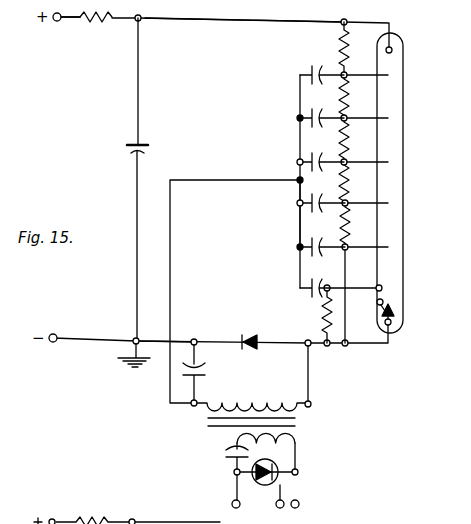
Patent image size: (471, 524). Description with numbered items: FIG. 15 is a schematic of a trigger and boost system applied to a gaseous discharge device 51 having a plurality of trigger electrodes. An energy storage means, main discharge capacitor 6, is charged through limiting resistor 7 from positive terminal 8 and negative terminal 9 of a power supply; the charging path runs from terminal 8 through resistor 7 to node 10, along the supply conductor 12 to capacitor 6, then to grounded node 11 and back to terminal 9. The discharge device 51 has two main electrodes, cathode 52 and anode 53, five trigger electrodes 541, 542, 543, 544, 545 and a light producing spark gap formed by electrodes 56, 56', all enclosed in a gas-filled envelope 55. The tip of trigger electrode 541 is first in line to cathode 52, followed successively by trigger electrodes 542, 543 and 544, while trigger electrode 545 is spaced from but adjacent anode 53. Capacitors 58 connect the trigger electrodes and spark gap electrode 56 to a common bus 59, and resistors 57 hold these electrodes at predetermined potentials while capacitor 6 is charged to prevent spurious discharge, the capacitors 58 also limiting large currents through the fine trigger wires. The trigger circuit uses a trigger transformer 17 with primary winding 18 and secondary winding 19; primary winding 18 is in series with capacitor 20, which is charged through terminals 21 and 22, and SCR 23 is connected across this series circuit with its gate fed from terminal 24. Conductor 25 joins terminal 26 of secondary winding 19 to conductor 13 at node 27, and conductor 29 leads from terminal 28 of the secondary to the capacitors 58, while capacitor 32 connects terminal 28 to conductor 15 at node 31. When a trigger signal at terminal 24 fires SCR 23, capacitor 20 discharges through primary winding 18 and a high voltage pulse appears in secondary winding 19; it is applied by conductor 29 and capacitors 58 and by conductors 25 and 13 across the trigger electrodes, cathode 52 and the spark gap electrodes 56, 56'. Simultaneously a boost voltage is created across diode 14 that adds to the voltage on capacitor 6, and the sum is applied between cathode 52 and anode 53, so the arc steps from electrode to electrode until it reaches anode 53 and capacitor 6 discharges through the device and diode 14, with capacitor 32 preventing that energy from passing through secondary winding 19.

The main discharge capacitor 6 is at (142, 150).
The limiting resistor 7 is at (82, 23).
The positive terminal 8 is at (56, 22).
The negative terminal 9 is at (52, 334).
The node 10 is at (136, 20).
The node 11 is at (133, 340).
The supply conductor 12 is at (167, 20).
The conductor 13 is at (320, 349).
The diode 14 is at (249, 337).
The conductor 15 is at (152, 339).
The trigger transformer 17 is at (300, 428).
The primary winding 18 is at (274, 439).
The secondary winding 19 is at (265, 402).
The capacitor 20 is at (230, 453).
The terminal 21 is at (233, 501).
The terminal 22 is at (298, 501).
The SCR 23 is at (277, 463).
The terminal 24 is at (276, 503).
The conductor 25 is at (311, 364).
The terminal 26 is at (311, 403).
The node 27 is at (307, 340).
The terminal 28 is at (191, 404).
The conductor 29 is at (238, 178).
The node 31 is at (194, 338).
The capacitor 32 is at (205, 373).
The gaseous discharge device 51 is at (398, 137).
The cathode 52 is at (394, 310).
The anode 53 is at (392, 49).
The trigger electrode 541 is at (388, 247).
The trigger electrode 542 is at (388, 204).
The trigger electrode 543 is at (388, 163).
The trigger electrode 544 is at (388, 118).
The trigger electrode 545 is at (388, 77).
The envelope 55 is at (403, 318).
The spark gap electrode 56 is at (406, 269).
The spark gap electrode 56' is at (409, 289).
The resistor 57 is at (340, 50).
The capacitor 58 is at (311, 113).
The common bus 59 is at (300, 213).